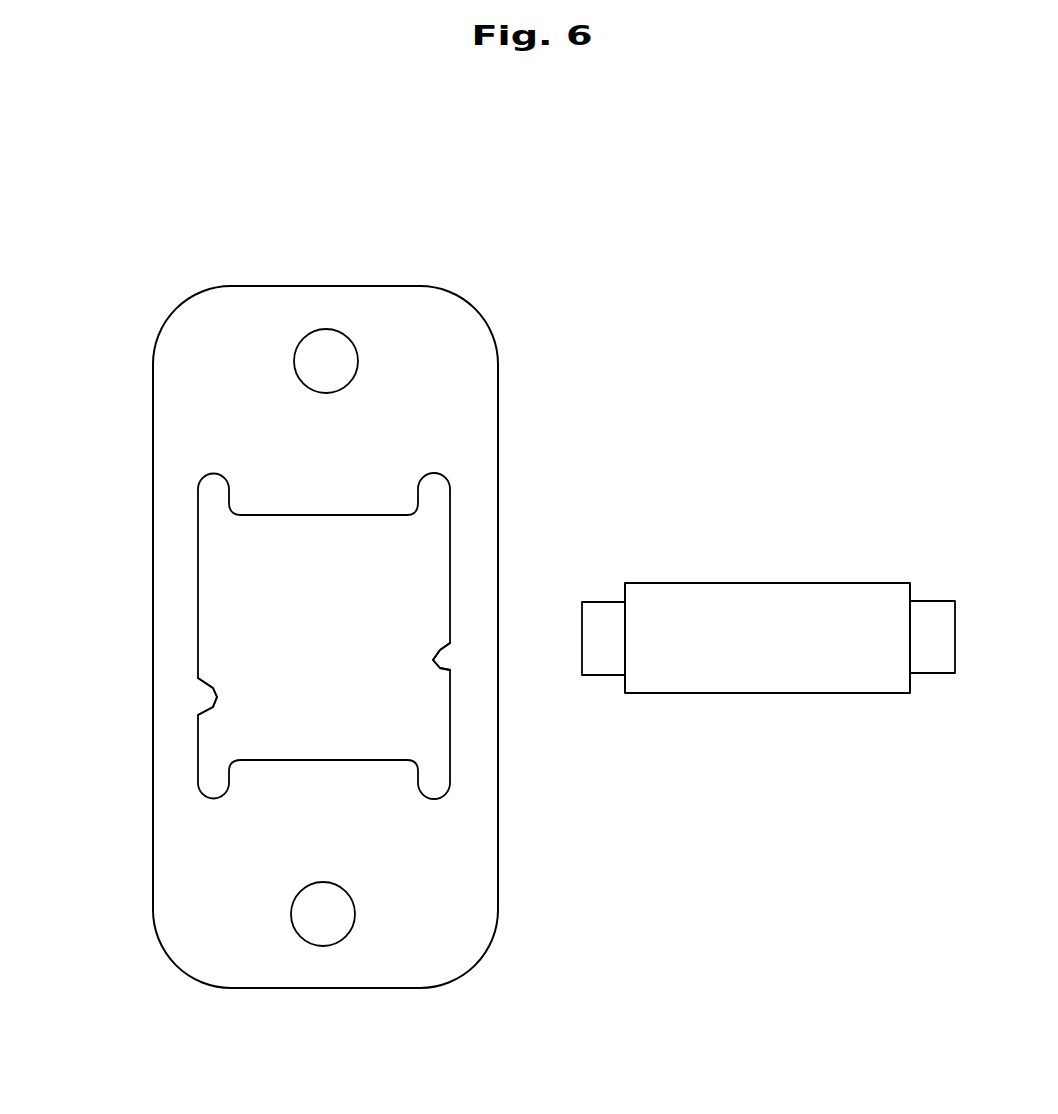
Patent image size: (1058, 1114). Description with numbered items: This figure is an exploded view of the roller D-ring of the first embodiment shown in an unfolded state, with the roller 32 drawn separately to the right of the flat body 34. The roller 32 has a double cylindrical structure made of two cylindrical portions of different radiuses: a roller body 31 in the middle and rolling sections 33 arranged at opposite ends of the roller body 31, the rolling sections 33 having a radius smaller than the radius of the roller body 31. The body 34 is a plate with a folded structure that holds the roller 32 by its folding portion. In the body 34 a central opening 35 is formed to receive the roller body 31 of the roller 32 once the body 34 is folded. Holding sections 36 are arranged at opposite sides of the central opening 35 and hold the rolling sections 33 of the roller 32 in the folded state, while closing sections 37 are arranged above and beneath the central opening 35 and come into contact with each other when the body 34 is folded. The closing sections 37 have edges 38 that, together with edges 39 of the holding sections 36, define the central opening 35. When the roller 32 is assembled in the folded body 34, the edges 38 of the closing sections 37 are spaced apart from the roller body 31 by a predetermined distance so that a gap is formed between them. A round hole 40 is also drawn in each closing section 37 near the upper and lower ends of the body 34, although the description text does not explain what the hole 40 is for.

The roller body 31 is at (800, 597).
The roller 32 is at (773, 568).
The rolling sections 33 is at (932, 615).
The body 34 is at (473, 281).
The central opening 35 is at (258, 605).
The holding sections 36 is at (175, 667).
The closing sections 37 is at (338, 429).
The edges of the closing sections 38 is at (367, 517).
The edges of the holding sections 39 is at (210, 707).
The mounting hole 40 is at (323, 350).